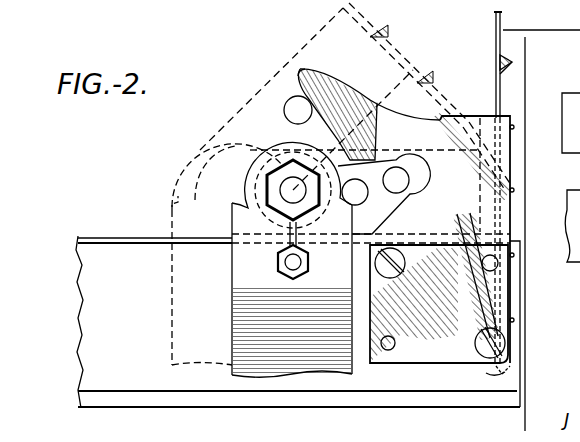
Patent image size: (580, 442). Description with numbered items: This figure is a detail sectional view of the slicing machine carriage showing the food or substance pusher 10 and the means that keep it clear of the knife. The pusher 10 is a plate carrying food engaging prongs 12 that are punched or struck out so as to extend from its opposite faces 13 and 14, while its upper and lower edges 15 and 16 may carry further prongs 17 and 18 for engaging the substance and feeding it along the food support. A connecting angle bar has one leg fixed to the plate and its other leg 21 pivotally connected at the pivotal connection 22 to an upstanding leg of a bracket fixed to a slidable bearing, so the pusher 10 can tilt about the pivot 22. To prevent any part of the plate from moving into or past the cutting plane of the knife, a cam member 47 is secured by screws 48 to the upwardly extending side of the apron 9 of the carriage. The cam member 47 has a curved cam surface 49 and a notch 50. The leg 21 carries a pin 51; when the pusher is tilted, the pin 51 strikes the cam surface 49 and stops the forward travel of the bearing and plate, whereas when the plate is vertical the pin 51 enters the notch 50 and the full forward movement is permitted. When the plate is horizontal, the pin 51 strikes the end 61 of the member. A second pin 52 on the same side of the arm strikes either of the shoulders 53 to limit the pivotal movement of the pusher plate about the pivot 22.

The apron 9 is at (84, 238).
The food or substance pusher 10 is at (497, 32).
The food engaging prongs 12 is at (512, 62).
The face of the plate 13 is at (500, 86).
The face of the plate 14 is at (497, 88).
The upper edge 15 is at (494, 12).
The lower edge 16 is at (492, 366).
The prongs 17 is at (502, 13).
The prongs 18 is at (508, 370).
The leg of the connecting angle bar 21 is at (255, 105).
The pivotal connection 22 is at (267, 190).
The cam member 47 is at (426, 126).
The screws 48 is at (393, 278).
The curved cam surface 49 is at (346, 86).
The notch 50 is at (430, 182).
The pin 51 is at (292, 96).
The pin 52 is at (362, 196).
The shoulders 53 is at (175, 200).
The end of the member 61 is at (318, 68).